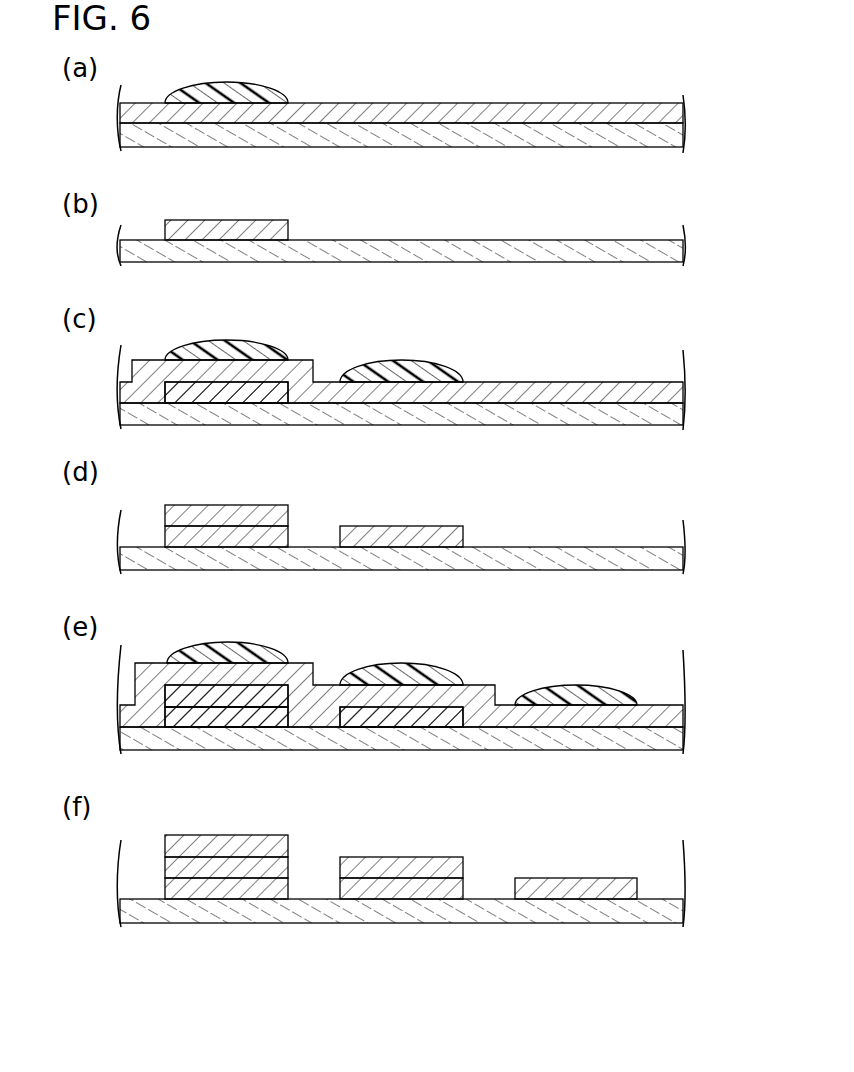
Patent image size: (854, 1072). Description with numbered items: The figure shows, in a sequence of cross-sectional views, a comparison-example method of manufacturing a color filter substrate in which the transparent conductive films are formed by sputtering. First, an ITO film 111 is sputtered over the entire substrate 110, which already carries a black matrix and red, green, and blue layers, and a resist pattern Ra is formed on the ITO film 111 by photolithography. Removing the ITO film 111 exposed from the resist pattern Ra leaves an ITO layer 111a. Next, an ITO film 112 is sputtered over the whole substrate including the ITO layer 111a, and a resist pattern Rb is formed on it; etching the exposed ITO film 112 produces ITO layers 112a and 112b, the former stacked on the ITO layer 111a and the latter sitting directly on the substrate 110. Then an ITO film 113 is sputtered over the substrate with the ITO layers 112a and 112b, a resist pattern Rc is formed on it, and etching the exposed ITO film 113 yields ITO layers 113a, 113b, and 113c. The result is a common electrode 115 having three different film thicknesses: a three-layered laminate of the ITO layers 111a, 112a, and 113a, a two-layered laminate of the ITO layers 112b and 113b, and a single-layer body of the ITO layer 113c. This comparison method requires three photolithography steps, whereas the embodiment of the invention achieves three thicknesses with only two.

The substrate 110 is at (684, 135).
The ITO film 111 is at (684, 112).
The ITO layer 111a is at (266, 220).
The ITO film 112 is at (684, 393).
The ITO layer 112a is at (210, 505).
The ITO layer 112b is at (396, 525).
The ITO film 113 is at (684, 716).
The ITO layer 113a is at (223, 836).
The ITO layer 113b is at (419, 858).
The ITO layer 113c is at (596, 879).
The common electrode 115 is at (489, 830).
The resist pattern Ra is at (231, 85).
The resist pattern Rb is at (217, 342).
The resist pattern Rc is at (229, 644).